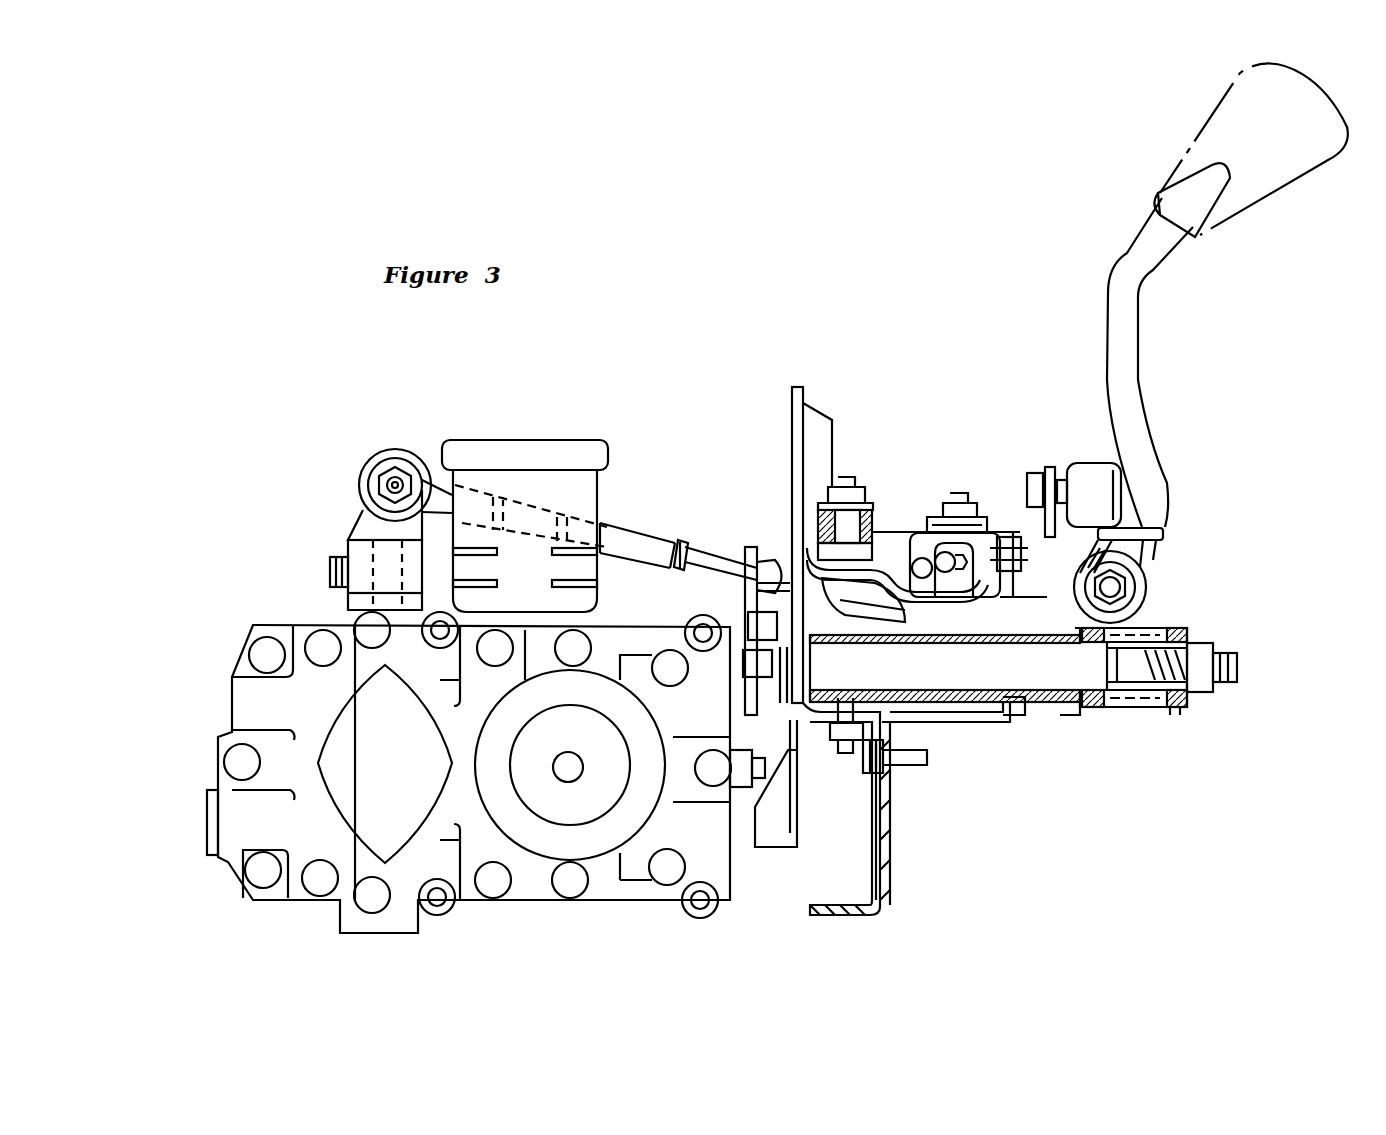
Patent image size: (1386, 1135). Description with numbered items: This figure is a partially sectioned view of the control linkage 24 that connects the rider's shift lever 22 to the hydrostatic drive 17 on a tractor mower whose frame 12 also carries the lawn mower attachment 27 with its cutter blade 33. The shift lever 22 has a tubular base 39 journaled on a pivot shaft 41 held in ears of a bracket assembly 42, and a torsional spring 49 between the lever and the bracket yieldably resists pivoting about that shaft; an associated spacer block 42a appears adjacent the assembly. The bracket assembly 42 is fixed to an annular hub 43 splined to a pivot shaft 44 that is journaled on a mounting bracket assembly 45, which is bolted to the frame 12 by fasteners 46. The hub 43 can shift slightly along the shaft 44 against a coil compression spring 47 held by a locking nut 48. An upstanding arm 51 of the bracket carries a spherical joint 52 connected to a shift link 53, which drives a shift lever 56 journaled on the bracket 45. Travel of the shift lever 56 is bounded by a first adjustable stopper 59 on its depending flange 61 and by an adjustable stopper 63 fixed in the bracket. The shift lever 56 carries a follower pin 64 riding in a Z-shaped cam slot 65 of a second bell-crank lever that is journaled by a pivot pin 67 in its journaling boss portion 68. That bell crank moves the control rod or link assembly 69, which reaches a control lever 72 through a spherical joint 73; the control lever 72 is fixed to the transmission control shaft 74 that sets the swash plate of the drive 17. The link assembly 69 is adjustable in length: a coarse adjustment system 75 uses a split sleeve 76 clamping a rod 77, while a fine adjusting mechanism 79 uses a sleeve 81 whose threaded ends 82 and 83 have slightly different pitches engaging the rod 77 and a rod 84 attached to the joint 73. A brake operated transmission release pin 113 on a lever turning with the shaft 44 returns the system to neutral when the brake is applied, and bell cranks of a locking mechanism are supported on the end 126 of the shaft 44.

The frame 12 is at (890, 870).
The hydrostatic drive 17 is at (280, 609).
The shift lever 22 is at (1122, 305).
The control linkage 24 is at (915, 373).
The lawn mower attachment 27 is at (568, 782).
The cutter blade 33 is at (760, 590).
The tubular base 39 is at (1142, 580).
The pivot shaft 41 is at (1150, 595).
The bracket assembly 42 is at (1130, 625).
The spacer block 42a is at (903, 516).
The annular hub 43 is at (845, 478).
The pivot shaft 44 is at (1048, 685).
The mounting bracket assembly 45 is at (988, 737).
The fasteners 46 is at (925, 760).
The coil compression spring 47 is at (1175, 718).
The locking nut 48 is at (1205, 645).
The torsional spring 49 is at (1150, 525).
The upstanding arm 51 is at (1050, 467).
The spherical joint 52 is at (1035, 473).
The shift link 53 is at (1105, 470).
The shift lever 56 is at (905, 516).
The first adjustable stopper 59 is at (925, 578).
The depending flange 61 is at (1015, 575).
The adjustable stopper 63 is at (945, 572).
The follower pin 64 is at (1067, 720).
The cam slot 65 is at (1125, 545).
The pivot pin 67 is at (958, 493).
The journaling boss portion 68 is at (920, 535).
The control rod or link assembly 69 is at (673, 485).
The control lever 72 is at (362, 492).
The spherical joint 73 is at (398, 455).
The transmission control shaft 74 is at (345, 565).
The coarse adjustment system 75 is at (845, 635).
The split sleeve 76 is at (873, 610).
The rod 77 is at (748, 547).
The fine adjusting mechanism 79 is at (580, 585).
The sleeve 81 is at (610, 535).
The threaded end 82 is at (565, 503).
The threaded end 83 is at (680, 545).
The rod 84 is at (530, 500).
The brake operated transmission release pin 113 is at (703, 650).
The end of the shaft 126 is at (673, 670).